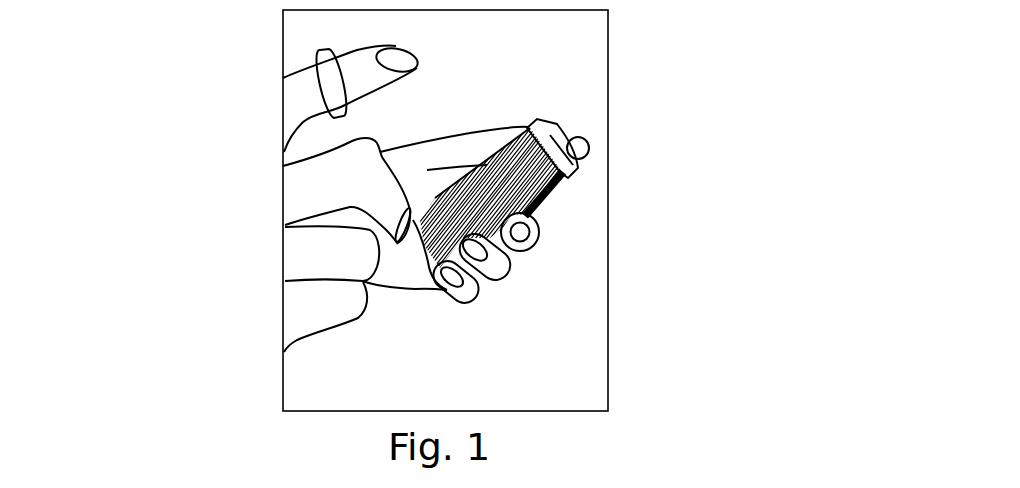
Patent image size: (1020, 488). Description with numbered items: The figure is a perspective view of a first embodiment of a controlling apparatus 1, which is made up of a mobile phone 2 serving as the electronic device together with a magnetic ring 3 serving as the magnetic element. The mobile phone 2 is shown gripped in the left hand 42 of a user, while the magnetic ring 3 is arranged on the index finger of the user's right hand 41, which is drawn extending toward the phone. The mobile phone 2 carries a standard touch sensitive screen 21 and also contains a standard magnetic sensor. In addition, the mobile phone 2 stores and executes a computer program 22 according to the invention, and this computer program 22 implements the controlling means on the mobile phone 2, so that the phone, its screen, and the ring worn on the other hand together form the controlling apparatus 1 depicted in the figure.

The controlling apparatus 1 is at (612, 182).
The mobile phone 2 is at (590, 170).
The touch sensitive screen 21 is at (567, 188).
The computer program 22 is at (547, 205).
The magnetic ring 3 is at (319, 80).
The right hand 41 is at (295, 188).
The left hand 42 is at (387, 259).